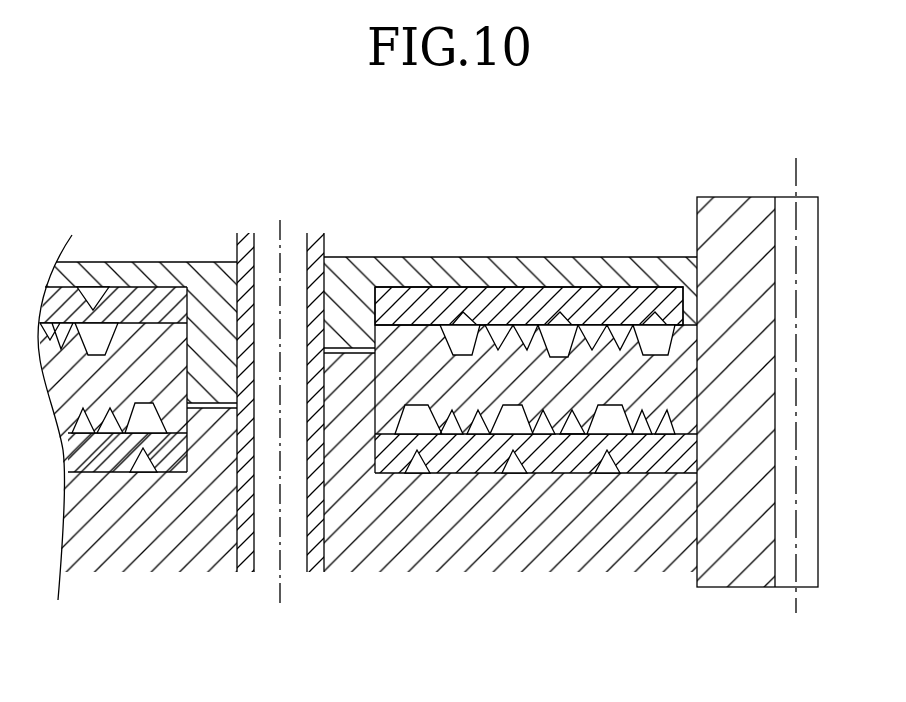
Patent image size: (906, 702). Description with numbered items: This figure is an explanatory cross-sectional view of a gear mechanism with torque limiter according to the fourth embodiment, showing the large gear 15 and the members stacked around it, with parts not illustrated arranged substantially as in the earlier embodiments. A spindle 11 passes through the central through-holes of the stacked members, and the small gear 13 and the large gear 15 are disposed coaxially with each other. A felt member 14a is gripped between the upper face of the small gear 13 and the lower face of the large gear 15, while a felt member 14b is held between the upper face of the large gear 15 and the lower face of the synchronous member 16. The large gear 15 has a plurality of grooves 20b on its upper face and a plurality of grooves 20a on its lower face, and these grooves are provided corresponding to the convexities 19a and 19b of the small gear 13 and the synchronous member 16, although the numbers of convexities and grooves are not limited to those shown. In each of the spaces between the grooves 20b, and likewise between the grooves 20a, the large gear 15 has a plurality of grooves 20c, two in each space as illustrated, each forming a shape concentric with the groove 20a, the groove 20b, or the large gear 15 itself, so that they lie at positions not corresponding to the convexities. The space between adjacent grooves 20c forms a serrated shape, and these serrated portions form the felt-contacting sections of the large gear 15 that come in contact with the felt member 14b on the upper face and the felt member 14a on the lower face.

The spindle 11 is at (307, 557).
The small gear 13 is at (376, 555).
The felt member 14a is at (660, 463).
The felt member 14b is at (620, 300).
The large gear 15 is at (731, 205).
The synchronous member 16 is at (370, 262).
The convexity 19a is at (418, 466).
The convexity 19b is at (463, 297).
The groove 20a is at (507, 425).
The groove 20b is at (557, 340).
The groove 20c is at (500, 333).